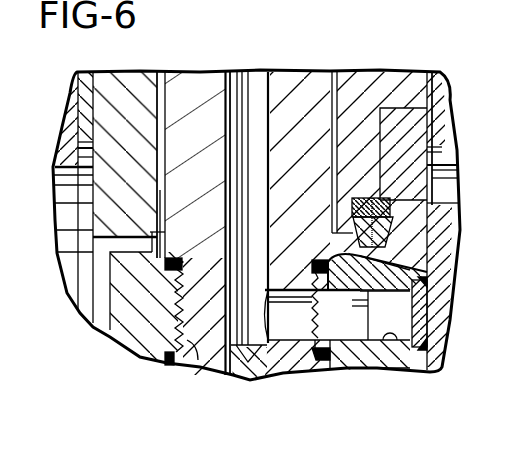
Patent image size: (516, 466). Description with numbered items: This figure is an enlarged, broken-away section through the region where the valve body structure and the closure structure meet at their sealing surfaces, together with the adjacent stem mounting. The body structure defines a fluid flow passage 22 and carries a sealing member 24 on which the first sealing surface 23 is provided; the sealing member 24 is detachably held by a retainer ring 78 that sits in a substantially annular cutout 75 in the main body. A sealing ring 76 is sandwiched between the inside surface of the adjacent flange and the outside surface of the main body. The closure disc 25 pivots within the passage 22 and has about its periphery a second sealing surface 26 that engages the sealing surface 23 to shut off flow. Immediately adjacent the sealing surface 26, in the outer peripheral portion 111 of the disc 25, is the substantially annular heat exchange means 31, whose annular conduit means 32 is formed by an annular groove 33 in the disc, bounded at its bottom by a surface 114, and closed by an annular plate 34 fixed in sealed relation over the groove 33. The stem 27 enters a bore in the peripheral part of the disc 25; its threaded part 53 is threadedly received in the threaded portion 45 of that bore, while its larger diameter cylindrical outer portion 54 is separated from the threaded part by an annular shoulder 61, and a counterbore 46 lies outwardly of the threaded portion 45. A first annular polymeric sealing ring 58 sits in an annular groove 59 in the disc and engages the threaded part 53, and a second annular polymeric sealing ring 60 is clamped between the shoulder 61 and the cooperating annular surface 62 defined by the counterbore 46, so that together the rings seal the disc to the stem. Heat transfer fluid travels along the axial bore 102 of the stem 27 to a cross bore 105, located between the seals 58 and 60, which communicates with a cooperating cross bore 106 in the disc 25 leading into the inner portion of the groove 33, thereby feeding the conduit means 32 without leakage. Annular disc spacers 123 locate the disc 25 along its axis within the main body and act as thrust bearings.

The fluid flow passage 22 is at (97, 308).
The sealing surface 23 is at (328, 248).
The sealing member 24 is at (350, 200).
The closure disc 25 is at (120, 332).
The sealing surface 26 is at (430, 213).
The stem 27 is at (202, 75).
The heat exchange means 31 is at (402, 317).
The annular conduit means 32 is at (402, 302).
The annular groove 33 is at (397, 340).
The annular plate 34 is at (428, 338).
The threaded portion 45 is at (198, 347).
The counterbore 46 is at (68, 270).
The threaded part 53 is at (143, 333).
The outer portion 54 is at (163, 97).
The annular polymeric sealing ring 58 is at (167, 367).
The annular groove 59 is at (348, 360).
The second annular polymeric sealing ring 60 is at (272, 268).
The annular shoulder 61 is at (170, 257).
The annular surface 62 is at (222, 308).
The annular cutout 75 is at (383, 140).
The sealing ring 76 is at (90, 80).
The retainer ring 78 is at (410, 172).
The axial bore 102 is at (257, 80).
The cross bore 105 is at (296, 327).
The cross bore 106 is at (352, 330).
The outer peripheral portion 111 is at (413, 275).
The surface 114 is at (338, 300).
The annular disc spacers 123 is at (163, 190).